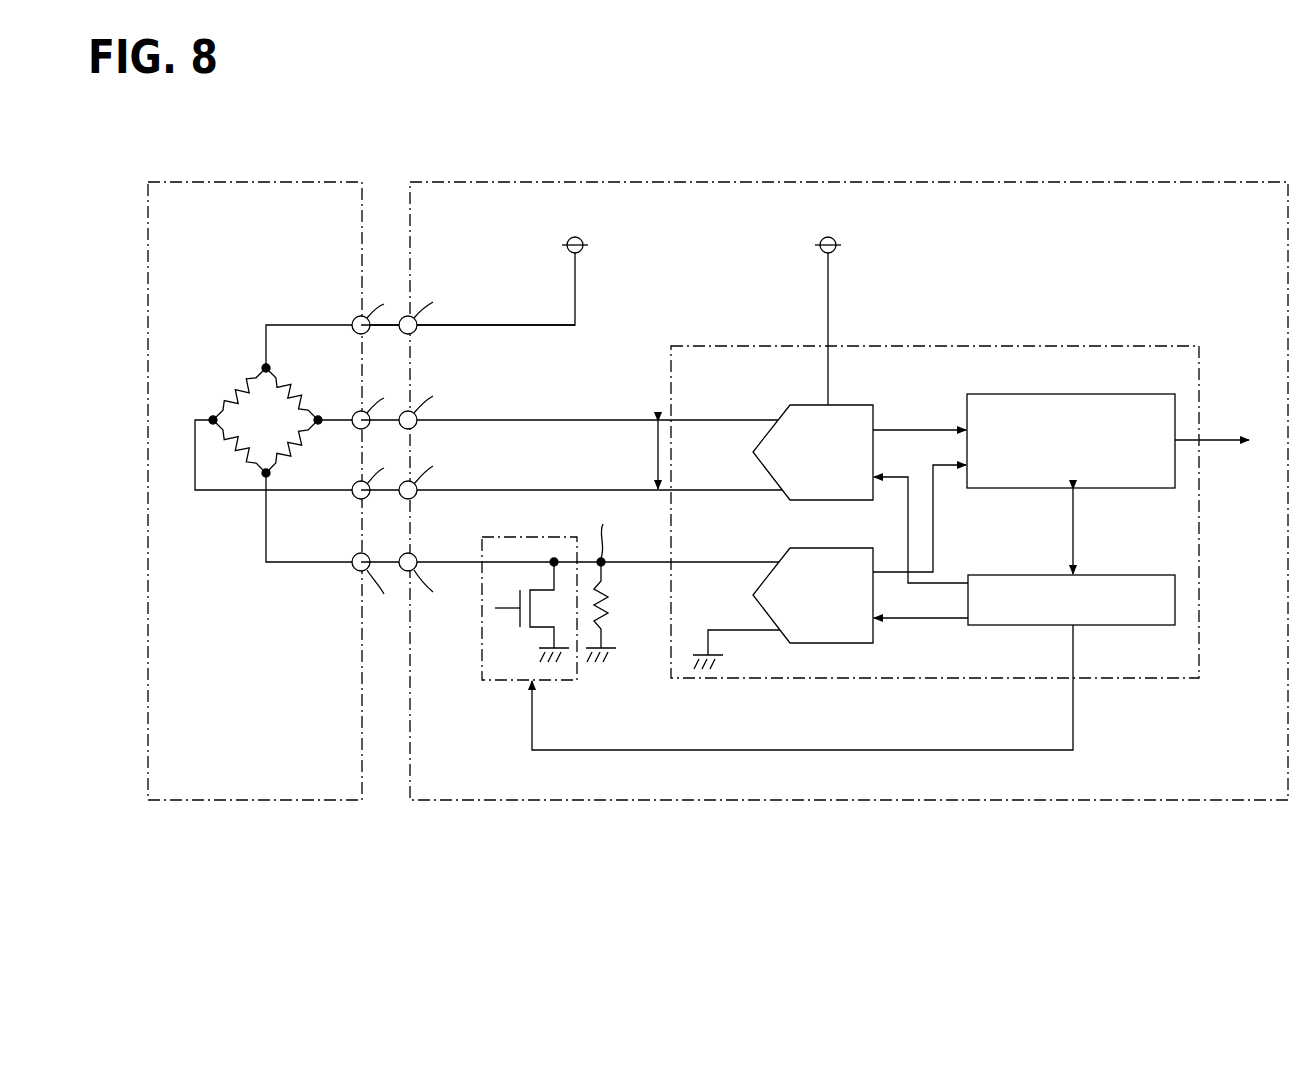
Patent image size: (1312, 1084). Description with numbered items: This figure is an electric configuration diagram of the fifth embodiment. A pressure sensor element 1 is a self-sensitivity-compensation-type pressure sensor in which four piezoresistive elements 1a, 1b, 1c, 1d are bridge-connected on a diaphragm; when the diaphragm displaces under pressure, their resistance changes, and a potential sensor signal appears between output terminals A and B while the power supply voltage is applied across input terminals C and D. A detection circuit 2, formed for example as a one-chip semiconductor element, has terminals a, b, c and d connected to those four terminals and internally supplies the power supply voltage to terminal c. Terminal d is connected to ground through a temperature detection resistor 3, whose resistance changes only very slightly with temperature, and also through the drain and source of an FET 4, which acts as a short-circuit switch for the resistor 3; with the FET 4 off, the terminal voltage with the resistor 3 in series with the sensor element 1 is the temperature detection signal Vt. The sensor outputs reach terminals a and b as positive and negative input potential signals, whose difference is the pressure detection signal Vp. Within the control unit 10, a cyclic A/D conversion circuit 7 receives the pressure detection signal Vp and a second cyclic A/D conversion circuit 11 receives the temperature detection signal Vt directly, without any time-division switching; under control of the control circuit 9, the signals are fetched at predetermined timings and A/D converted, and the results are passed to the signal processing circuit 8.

The pressure sensor element 1 is at (263, 182).
The piezoresistive element 1a is at (287, 388).
The piezoresistive element 1b is at (233, 388).
The piezoresistive element 1c is at (232, 457).
The piezoresistive element 1d is at (292, 452).
The detection circuit 2 is at (793, 182).
The temperature detection resistor 3 is at (616, 614).
The FET 4 is at (503, 624).
The cyclic A/D conversion circuit 7 is at (876, 420).
The signal processing circuit 8 is at (1105, 394).
The control circuit 9 is at (1125, 575).
The control unit 10 is at (1040, 346).
The cyclic A/D conversion circuit 11 is at (878, 644).